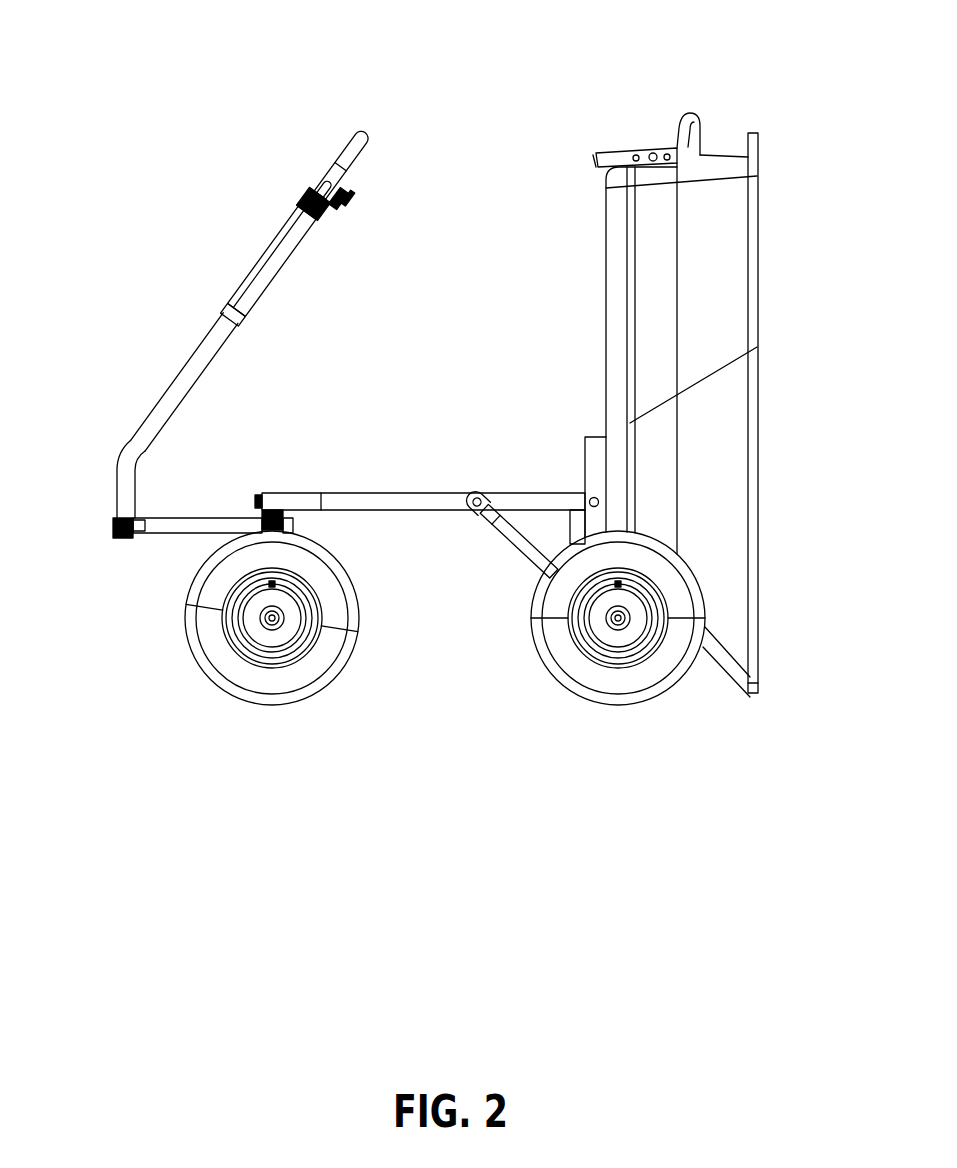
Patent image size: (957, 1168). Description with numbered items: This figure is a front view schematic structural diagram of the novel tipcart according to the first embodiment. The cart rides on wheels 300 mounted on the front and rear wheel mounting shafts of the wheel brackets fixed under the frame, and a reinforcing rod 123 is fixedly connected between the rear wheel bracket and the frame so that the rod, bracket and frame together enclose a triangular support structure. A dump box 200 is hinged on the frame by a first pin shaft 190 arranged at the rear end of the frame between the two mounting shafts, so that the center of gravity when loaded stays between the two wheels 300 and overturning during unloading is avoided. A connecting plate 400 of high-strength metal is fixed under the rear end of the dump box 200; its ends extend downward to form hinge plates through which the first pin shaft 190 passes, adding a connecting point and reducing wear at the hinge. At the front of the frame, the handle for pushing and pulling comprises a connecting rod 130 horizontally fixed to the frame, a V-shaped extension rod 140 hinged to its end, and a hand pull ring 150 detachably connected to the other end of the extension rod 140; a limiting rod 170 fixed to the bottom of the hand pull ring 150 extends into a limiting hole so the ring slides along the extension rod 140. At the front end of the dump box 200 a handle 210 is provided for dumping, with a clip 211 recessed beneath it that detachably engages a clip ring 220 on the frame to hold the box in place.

The hand pull ring 150 is at (272, 112).
The limiting rod 170 is at (217, 206).
The extension rod 140 is at (155, 361).
The clip ring 220 is at (309, 428).
The connecting rod 130 is at (142, 565).
The clip 211 is at (557, 88).
The handle 210 is at (778, 89).
The dump box 200 is at (754, 415).
The connecting plate 400 is at (743, 425).
The first pin shaft 190 is at (742, 455).
The reinforcing rod 123 is at (444, 632).
The wheel 300 is at (585, 653).